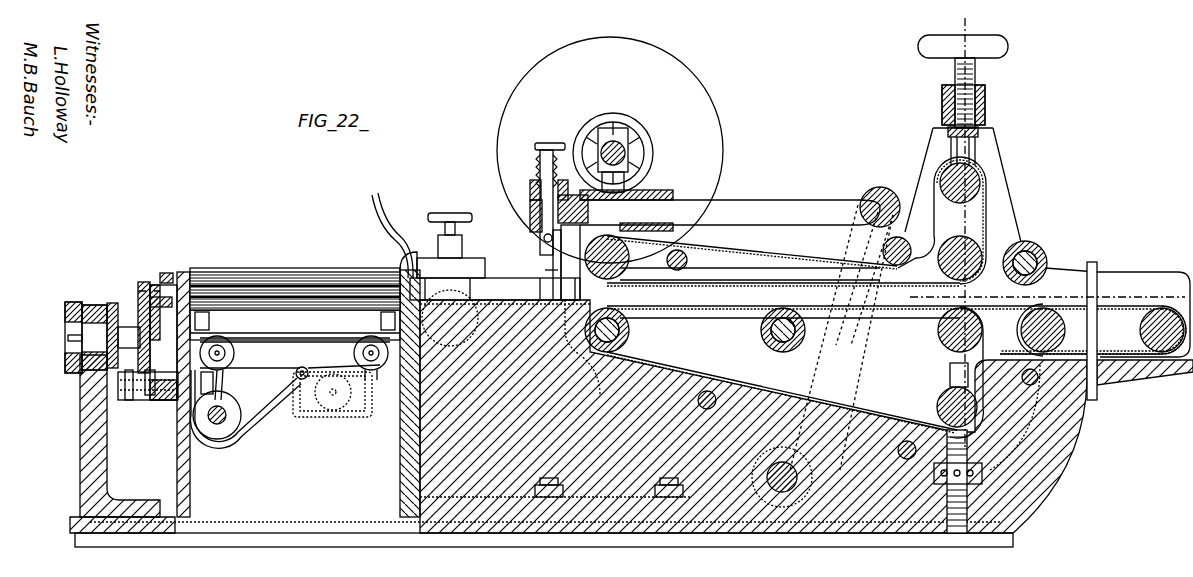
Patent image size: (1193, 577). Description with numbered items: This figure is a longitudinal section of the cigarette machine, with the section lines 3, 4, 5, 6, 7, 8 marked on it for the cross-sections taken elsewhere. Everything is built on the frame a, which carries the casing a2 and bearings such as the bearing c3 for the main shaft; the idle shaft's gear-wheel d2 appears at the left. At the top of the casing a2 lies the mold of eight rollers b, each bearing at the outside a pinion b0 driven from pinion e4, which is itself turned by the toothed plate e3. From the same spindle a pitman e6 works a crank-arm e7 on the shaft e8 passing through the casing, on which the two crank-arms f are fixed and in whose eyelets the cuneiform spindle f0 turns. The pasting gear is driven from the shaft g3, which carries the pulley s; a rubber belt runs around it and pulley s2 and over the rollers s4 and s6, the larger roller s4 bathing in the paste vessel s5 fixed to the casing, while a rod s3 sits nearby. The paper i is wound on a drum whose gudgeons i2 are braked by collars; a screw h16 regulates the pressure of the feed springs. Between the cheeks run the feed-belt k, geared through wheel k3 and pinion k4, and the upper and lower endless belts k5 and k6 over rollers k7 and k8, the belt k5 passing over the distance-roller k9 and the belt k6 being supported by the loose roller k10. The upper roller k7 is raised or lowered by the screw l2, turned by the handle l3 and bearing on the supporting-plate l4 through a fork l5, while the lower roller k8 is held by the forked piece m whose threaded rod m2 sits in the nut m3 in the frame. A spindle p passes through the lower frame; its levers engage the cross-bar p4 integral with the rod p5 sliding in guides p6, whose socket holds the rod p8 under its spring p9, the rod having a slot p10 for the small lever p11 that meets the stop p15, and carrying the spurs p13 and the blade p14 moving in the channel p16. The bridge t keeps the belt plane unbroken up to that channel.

The frame a is at (852, 430).
The casing a2 is at (190, 502).
The rollers b is at (298, 296).
The pinion b0 is at (166, 273).
The bearing c3 is at (80, 460).
The third gear-wheel d2 is at (72, 318).
The toothed plate e3 is at (150, 392).
The pinion e4 is at (144, 282).
The pitman e6 is at (129, 333).
The crank-arm e7 is at (126, 392).
The shaft e8 is at (230, 388).
The crank-arms f is at (294, 342).
The spindle f0 is at (295, 327).
The shaft g3 is at (215, 424).
The screw h16 is at (444, 214).
The paper i is at (718, 108).
The gudgeons i2 is at (613, 160).
The feed-belt k is at (1118, 306).
The wheel k3 is at (959, 251).
The pinion k4 is at (772, 260).
The upper endless belt k5 is at (736, 264).
The lower endless belt k6 is at (703, 320).
The upper roller k7 is at (1024, 202).
The lower roller k8 is at (950, 398).
The distance-roller k9 is at (887, 251).
The loose roller k10 is at (761, 331).
The screw l2 is at (955, 76).
The operating-handle l3 is at (918, 46).
The supporting-plate l4 is at (980, 132).
The fork l5 is at (976, 150).
The forked piece m is at (948, 384).
The screw-threaded rod m2 is at (960, 533).
The nut m3 is at (984, 472).
The roller o is at (1042, 250).
The spindle p is at (797, 476).
The cross-bar p4 is at (877, 192).
The rod p5 is at (762, 210).
The ways or guides p6 is at (672, 198).
The rod p8 is at (547, 143).
The opposing spring p9 is at (537, 150).
The slot p10 is at (537, 172).
The small lever p11 is at (532, 206).
The spurs p13 is at (544, 239).
The steel blade p14 is at (553, 263).
The abutment or stop p15 is at (375, 208).
The channel p16 is at (495, 279).
The pulley s is at (231, 431).
The pulley s2 is at (356, 359).
The rod s3 is at (250, 353).
The roller s4 is at (318, 398).
The vessel s5 is at (354, 414).
The roller s6 is at (305, 368).
The bridge t is at (988, 302).
The section line 3 is at (134, 290).
The section line 4 is at (1131, 331).
The section line 5 is at (540, 295).
The section line 6 is at (515, 300).
The section line 7 is at (265, 318).
The section line 8 is at (265, 500).